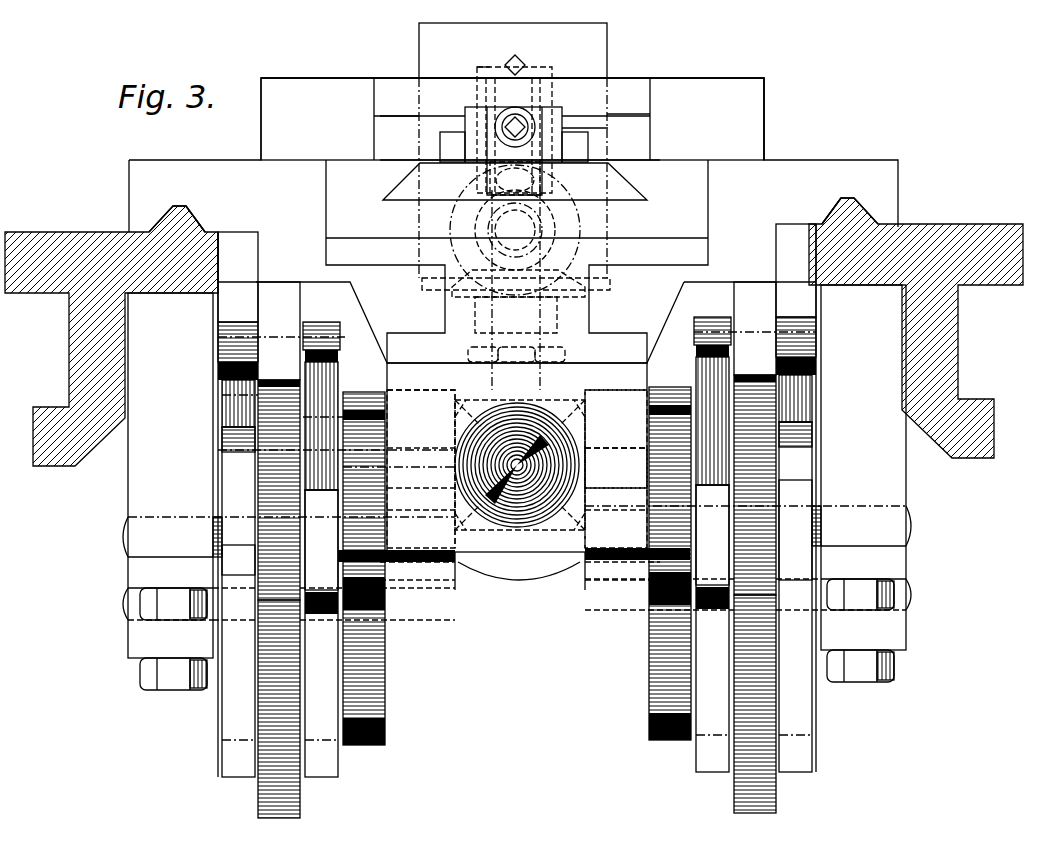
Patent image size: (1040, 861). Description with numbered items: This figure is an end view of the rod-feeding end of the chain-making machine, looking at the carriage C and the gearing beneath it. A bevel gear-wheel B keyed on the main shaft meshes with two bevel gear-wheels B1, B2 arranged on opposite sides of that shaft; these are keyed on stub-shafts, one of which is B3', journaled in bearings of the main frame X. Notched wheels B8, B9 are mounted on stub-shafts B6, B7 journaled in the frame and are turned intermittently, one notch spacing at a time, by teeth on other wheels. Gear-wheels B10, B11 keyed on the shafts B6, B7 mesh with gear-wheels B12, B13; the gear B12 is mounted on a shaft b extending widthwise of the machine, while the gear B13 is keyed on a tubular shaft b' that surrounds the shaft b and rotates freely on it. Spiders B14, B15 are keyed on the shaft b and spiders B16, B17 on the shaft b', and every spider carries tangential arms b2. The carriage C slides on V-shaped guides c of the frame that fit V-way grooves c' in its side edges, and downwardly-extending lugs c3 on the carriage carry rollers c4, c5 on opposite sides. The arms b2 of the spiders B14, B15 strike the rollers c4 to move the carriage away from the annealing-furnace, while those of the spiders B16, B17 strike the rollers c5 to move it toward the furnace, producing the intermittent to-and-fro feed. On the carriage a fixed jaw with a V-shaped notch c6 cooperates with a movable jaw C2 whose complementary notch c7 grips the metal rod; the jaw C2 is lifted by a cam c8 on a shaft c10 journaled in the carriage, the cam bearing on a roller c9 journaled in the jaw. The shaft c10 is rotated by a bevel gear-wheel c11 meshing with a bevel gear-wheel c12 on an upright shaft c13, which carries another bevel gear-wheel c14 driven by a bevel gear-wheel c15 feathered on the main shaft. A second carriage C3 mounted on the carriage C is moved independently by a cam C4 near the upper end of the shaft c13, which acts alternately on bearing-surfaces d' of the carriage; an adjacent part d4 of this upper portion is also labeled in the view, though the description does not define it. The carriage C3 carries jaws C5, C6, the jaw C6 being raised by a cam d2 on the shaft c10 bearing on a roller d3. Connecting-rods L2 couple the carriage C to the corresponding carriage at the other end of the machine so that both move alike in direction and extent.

The carriage C is at (513, 220).
The movable jaw C2 is at (560, 70).
The second carriage C3 is at (515, 181).
The cam C4 is at (514, 147).
The jaw C5 is at (513, 50).
The jaw C6 is at (477, 73).
The V-shaped notch c7 is at (490, 68).
The V-shaped notch c6 is at (524, 62).
The cam c8 is at (480, 250).
The roller c9 is at (496, 182).
The shaft c10 is at (515, 230).
The bevel gear-wheel c11 is at (585, 232).
The bevel gear-wheel c12 is at (590, 296).
The upright shaft c13 is at (557, 335).
The bevel gear-wheel c14 is at (560, 400).
The bevel gear-wheel c15 is at (582, 424).
The V-way grooves c' is at (513, 205).
The V-shaped guides c is at (530, 215).
The lugs c3 is at (517, 331).
The rollers c4 is at (226, 325).
The rollers c5 is at (318, 324).
The bearing-surface d' is at (515, 127).
The cam d2 is at (553, 220).
The roller d3 is at (490, 168).
The housing d4 is at (545, 135).
The connecting-rods L2 is at (517, 273).
The main frame X is at (514, 332).
The bevel gear-wheel B is at (517, 465).
The bevel gear-wheel B1 is at (455, 417).
The bevel gear-wheel B2 is at (588, 416).
The stub-shaft B3' is at (616, 468).
The stub-shaft B6 is at (213, 628).
The stub-shaft B7 is at (830, 575).
The notched wheel B8 is at (385, 705).
The notched wheel B9 is at (655, 695).
The gear-wheel B10 is at (279, 709).
The gear-wheel B11 is at (755, 704).
The gear-wheel B12 is at (279, 490).
The gear-wheel B13 is at (755, 485).
The spider B14 is at (238, 560).
The spider B15 is at (795, 568).
The spider B16 is at (321, 564).
The spider B17 is at (712, 575).
The shaft b is at (514, 522).
The tubular shaft b' is at (517, 473).
The tangential arms b2 is at (515, 586).